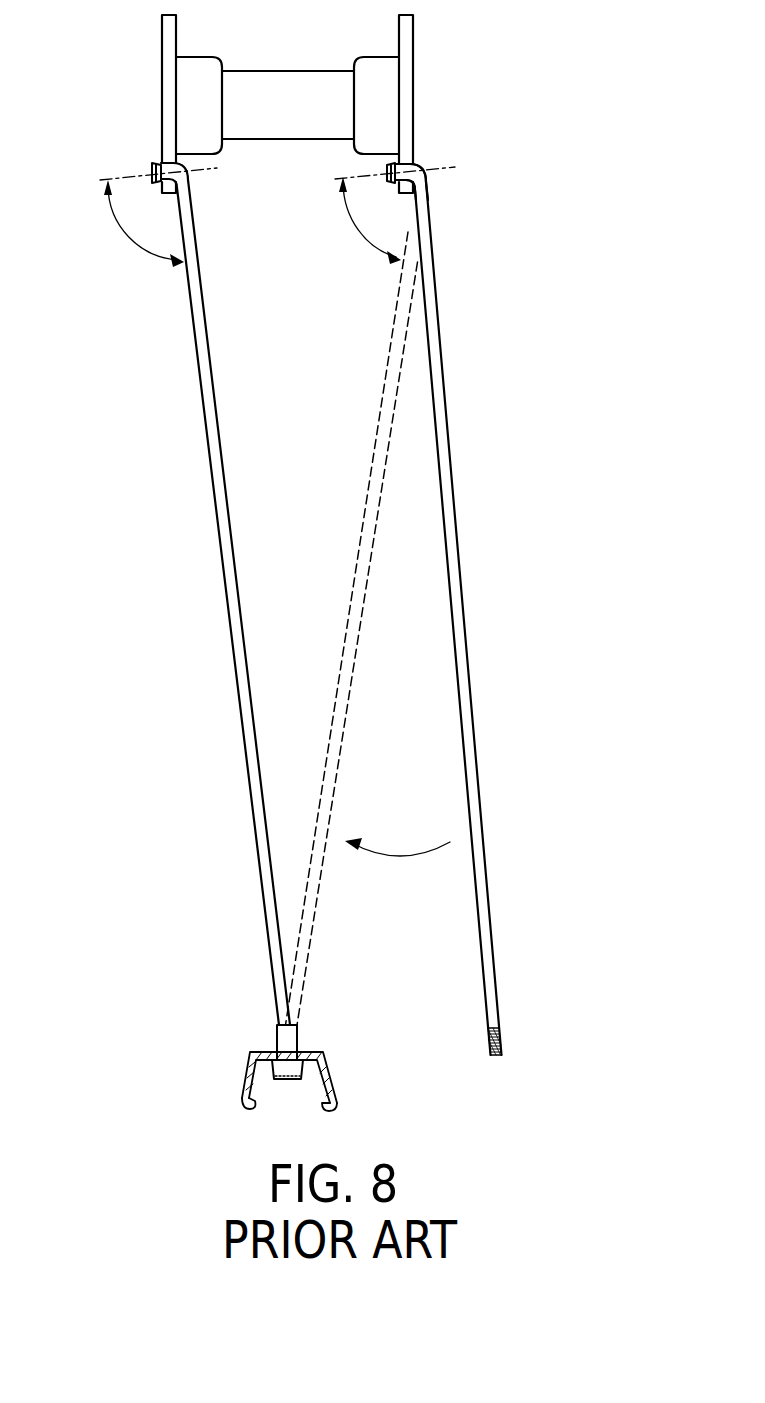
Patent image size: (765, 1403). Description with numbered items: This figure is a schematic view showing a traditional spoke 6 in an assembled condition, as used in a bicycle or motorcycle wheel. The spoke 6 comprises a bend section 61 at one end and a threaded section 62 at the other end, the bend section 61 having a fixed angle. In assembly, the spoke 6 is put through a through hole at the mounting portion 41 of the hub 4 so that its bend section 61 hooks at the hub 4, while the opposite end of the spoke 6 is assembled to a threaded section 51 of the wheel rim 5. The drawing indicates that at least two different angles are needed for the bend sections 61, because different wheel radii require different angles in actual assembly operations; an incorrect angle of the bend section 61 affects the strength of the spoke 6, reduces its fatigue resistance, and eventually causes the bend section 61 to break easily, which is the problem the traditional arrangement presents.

The hub 4 is at (293, 82).
The axle nut 41 is at (415, 163).
The wheel rim 5 is at (240, 1082).
The threaded section 51 is at (283, 1038).
The spoke 6 is at (228, 560).
The bend section 61 is at (423, 175).
The threaded section 62 is at (503, 1038).